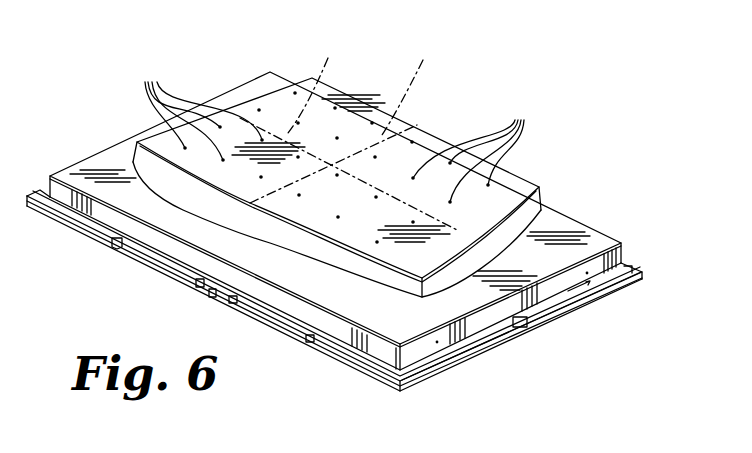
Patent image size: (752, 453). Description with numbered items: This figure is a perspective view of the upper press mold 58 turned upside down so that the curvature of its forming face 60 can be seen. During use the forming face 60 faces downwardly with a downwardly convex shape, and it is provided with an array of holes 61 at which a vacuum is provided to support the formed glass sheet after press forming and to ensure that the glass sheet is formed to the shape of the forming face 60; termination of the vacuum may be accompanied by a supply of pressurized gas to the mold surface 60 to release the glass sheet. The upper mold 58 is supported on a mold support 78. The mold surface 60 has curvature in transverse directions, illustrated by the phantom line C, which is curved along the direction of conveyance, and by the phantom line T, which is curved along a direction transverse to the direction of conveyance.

The upper press mold 58 is at (563, 193).
The forming face 60 is at (425, 135).
The array of holes 61 is at (328, 131).
The mold support 78 is at (546, 290).
The phantom line T is at (348, 133).
The phantom line C is at (340, 122).